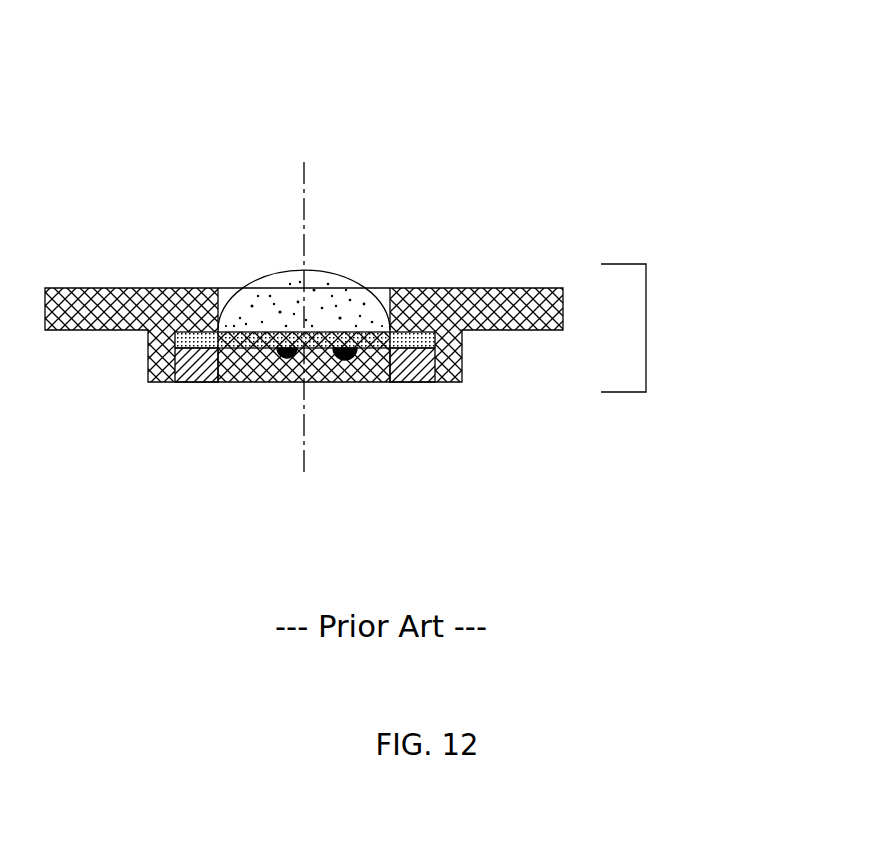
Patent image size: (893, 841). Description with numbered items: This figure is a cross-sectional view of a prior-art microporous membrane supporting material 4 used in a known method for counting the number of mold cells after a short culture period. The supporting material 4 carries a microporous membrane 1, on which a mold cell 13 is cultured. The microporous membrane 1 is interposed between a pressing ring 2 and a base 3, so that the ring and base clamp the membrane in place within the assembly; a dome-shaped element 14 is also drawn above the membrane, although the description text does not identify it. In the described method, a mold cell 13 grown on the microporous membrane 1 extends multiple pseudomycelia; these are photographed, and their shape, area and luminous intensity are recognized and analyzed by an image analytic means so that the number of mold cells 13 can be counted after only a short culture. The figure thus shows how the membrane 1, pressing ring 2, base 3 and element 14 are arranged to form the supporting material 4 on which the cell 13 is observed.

The microporous membrane 1 is at (207, 372).
The pressing ring 2 is at (425, 377).
The base 3 is at (150, 276).
The microporous membrane supporting material 4 is at (654, 318).
The mold cell 13 is at (354, 365).
The lens dome 14 is at (352, 266).